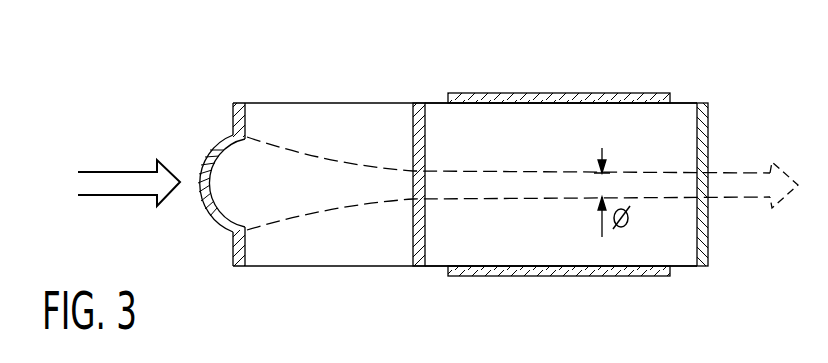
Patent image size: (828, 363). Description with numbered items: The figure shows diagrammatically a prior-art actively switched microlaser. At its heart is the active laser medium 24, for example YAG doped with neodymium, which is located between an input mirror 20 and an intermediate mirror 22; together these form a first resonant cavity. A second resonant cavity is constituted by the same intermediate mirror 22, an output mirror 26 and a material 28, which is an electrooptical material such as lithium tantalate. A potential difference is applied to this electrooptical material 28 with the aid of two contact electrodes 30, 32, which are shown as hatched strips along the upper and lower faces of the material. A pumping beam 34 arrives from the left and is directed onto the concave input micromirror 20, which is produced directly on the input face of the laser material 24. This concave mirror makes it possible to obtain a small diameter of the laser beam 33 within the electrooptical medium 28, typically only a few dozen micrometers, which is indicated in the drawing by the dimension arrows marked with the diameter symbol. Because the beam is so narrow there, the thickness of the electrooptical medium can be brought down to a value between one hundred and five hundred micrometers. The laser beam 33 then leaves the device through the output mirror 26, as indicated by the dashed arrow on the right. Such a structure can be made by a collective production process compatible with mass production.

The concave input micromirror 20 is at (213, 218).
The intermediate mirror 22 is at (420, 243).
The active laser medium 24 is at (335, 110).
The output mirror 26 is at (702, 240).
The electrooptical material 28 is at (673, 113).
The contact electrode 30 is at (643, 272).
The contact electrode 32 is at (548, 98).
The laser beam 33 is at (290, 217).
The pumping beam 34 is at (118, 178).